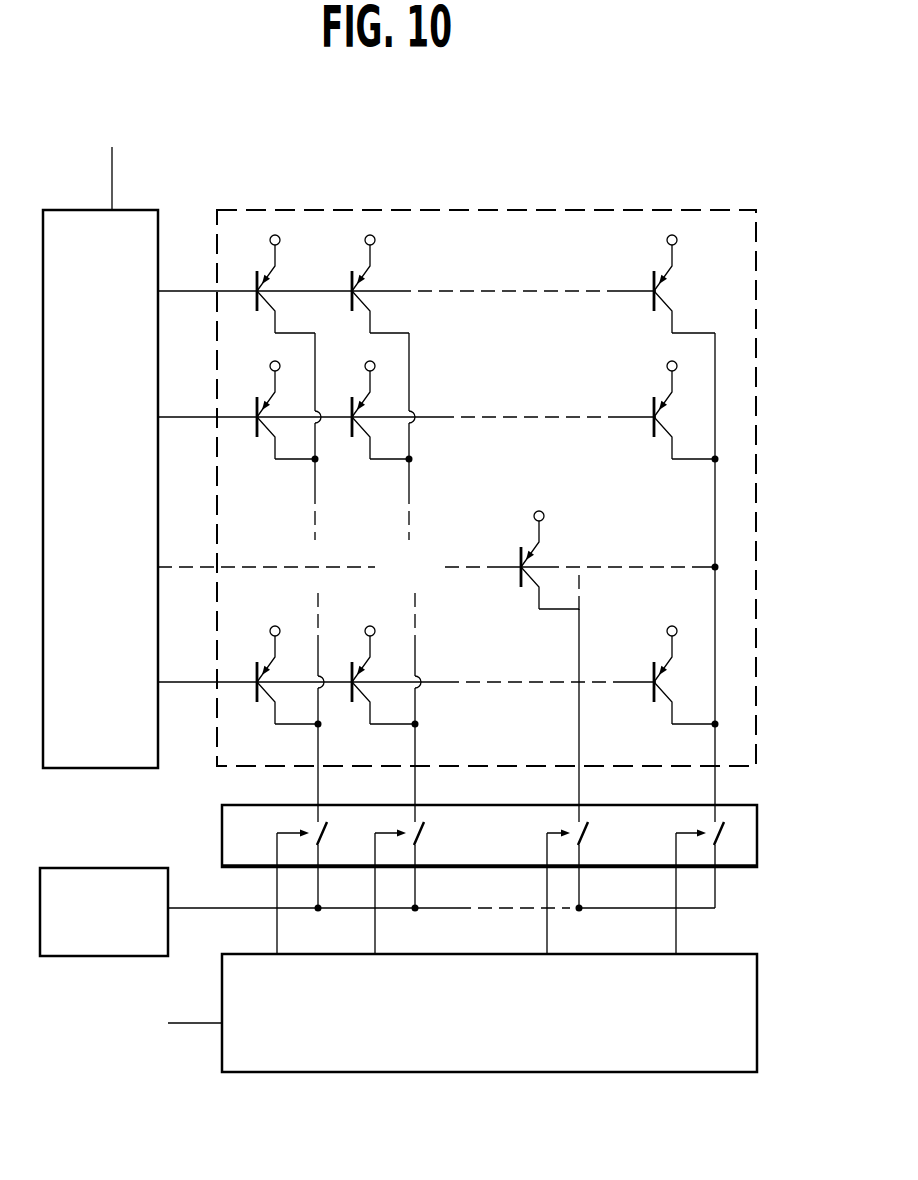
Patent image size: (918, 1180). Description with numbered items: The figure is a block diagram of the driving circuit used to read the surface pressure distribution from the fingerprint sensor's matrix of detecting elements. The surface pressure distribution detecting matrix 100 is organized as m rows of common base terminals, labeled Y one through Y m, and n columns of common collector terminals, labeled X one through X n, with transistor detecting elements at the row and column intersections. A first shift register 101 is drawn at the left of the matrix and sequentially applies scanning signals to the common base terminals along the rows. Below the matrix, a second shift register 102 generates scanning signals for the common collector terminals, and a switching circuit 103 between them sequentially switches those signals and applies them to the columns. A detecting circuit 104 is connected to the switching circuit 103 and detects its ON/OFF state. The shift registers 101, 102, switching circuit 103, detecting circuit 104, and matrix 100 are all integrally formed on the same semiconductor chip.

The surface pressure distribution detecting matrix 100 is at (513, 206).
The shift register 101 is at (103, 757).
The shift register 102 is at (270, 1060).
The switching circuit 103 is at (737, 858).
The detecting circuit 104 is at (105, 868).